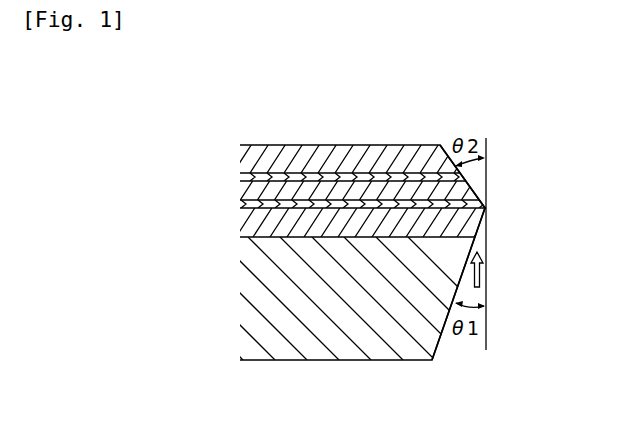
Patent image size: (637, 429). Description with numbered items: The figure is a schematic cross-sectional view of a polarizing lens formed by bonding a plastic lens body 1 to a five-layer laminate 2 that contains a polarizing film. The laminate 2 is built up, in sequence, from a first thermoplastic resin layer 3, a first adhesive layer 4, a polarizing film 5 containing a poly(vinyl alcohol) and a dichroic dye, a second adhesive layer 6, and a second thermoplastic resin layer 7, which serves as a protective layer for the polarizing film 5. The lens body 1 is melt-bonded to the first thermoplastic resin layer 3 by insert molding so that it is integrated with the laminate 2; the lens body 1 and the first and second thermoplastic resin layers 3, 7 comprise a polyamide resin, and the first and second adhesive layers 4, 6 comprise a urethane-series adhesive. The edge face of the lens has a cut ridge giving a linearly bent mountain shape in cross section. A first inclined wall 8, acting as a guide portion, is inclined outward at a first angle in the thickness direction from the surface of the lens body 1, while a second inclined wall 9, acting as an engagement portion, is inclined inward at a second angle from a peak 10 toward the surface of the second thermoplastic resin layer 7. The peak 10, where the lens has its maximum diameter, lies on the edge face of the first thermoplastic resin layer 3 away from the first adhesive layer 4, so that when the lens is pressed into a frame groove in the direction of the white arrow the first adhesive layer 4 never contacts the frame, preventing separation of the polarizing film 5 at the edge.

The plastic lens body 1 is at (357, 328).
The laminate 2 is at (254, 132).
The first thermoplastic resin layer 3 is at (297, 230).
The first adhesive layer 4 is at (338, 207).
The polarizing film 5 is at (417, 193).
The second adhesive layer 6 is at (338, 178).
The second thermoplastic resin layer 7 is at (370, 157).
The first inclined wall 8 is at (442, 342).
The second inclined wall 9 is at (467, 188).
The peak 10 is at (485, 208).